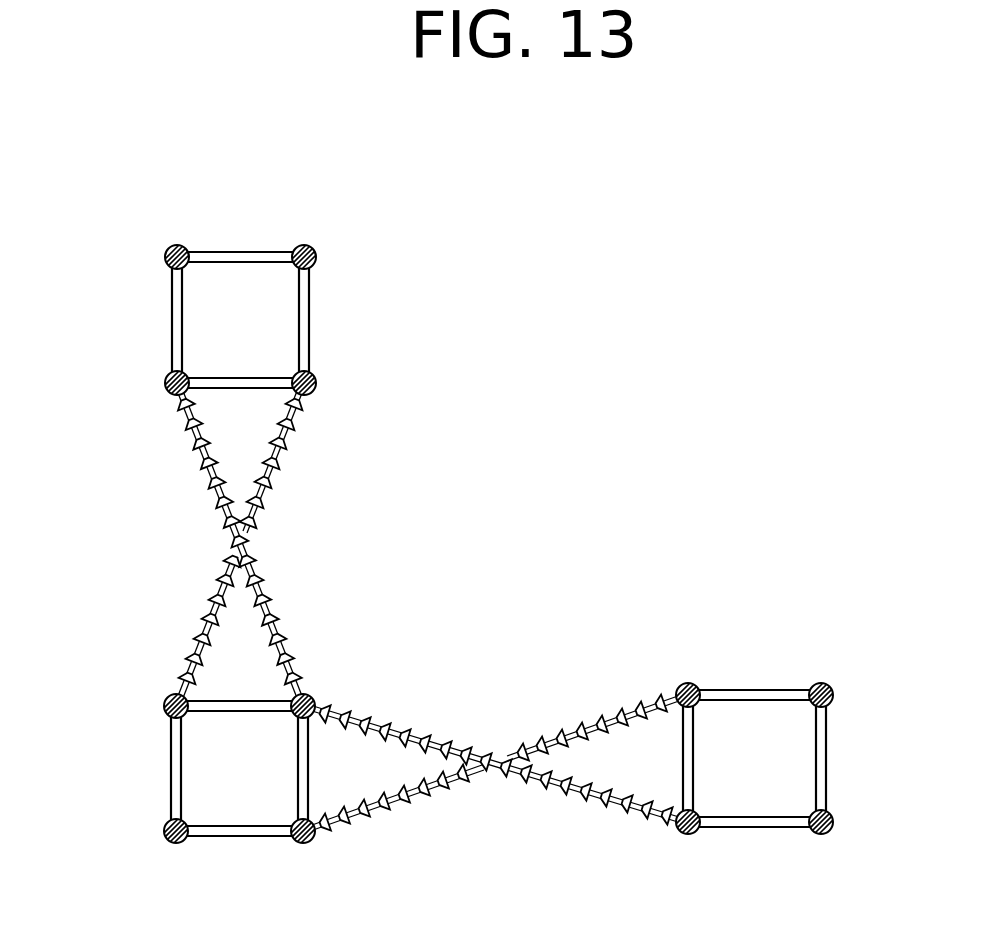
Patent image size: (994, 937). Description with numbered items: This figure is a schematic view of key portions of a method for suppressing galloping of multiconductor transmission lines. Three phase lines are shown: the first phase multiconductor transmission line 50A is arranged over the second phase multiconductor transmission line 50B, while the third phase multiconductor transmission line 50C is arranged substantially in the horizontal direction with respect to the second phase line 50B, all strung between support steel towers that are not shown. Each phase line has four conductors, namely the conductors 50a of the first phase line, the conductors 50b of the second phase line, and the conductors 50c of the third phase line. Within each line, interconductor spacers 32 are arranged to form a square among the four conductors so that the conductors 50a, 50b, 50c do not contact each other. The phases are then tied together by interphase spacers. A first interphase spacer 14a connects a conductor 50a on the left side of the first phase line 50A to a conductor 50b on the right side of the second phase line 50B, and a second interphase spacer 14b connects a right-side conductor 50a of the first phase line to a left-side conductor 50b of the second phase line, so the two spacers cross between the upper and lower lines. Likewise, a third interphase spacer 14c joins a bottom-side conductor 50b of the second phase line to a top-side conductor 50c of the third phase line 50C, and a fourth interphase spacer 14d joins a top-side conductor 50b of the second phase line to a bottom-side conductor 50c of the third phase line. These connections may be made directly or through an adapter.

The interconductor spacer 32 is at (240, 250).
The first phase multiconductor transmission line 50A is at (275, 334).
The second phase multiconductor transmission line 50B is at (277, 782).
The third phase multiconductor transmission line 50C is at (788, 774).
The conductor of the first phase transmission line 50a is at (176, 246).
The conductor of the second phase transmission line 50b is at (166, 700).
The conductor of the third phase transmission line 50c is at (685, 684).
The first interphase spacer 14a is at (193, 467).
The second interphase spacer 14b is at (260, 500).
The third interphase spacer 14c is at (440, 797).
The fourth interphase spacer 14d is at (588, 798).